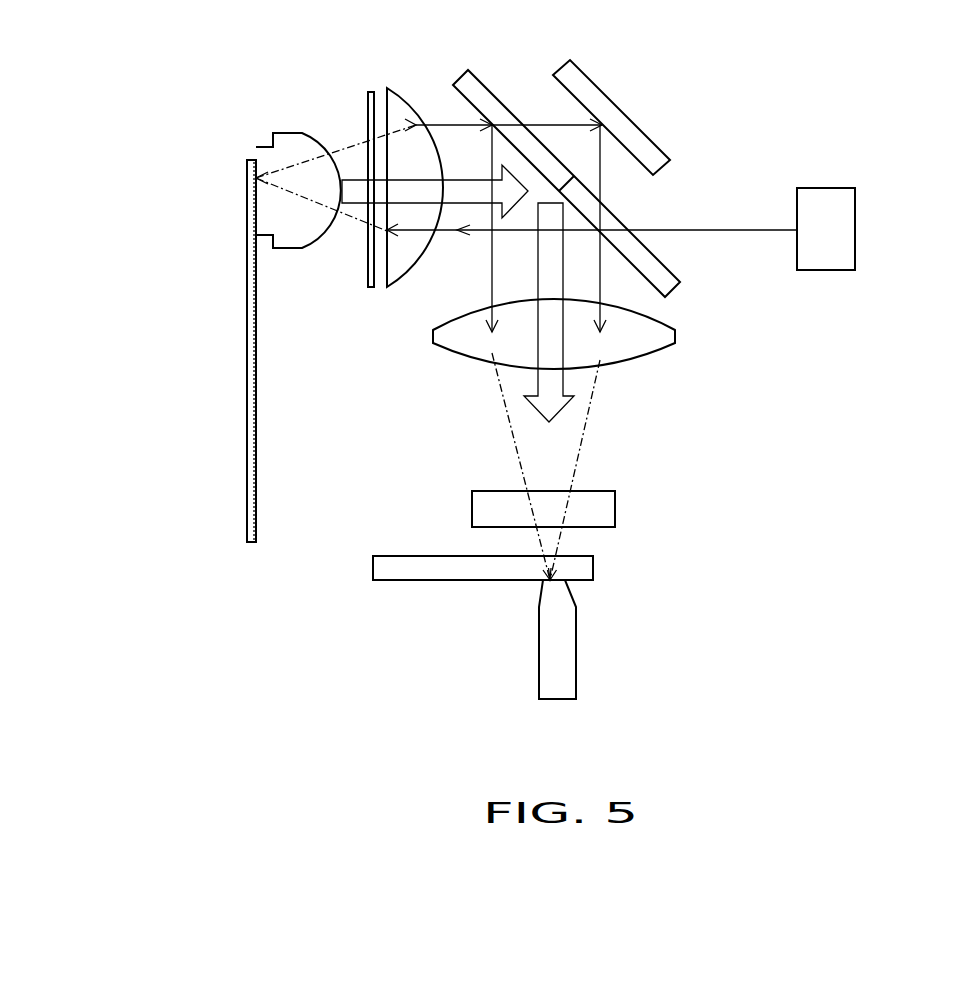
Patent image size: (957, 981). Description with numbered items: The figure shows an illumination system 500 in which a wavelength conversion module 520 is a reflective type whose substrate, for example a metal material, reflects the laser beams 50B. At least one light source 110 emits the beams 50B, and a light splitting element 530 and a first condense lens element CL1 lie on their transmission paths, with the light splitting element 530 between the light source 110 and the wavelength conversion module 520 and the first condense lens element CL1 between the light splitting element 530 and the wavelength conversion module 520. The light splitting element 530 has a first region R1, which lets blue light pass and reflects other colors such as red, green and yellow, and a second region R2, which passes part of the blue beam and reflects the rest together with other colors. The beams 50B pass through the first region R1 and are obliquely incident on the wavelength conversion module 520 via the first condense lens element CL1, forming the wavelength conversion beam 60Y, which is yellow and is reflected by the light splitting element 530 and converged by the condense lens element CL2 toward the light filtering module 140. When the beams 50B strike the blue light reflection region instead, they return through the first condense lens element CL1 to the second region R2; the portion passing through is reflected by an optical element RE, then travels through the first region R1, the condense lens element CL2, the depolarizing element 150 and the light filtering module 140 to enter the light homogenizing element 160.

The illumination system 500 is at (950, 688).
The light source 110 is at (825, 187).
The light filtering module 140 is at (425, 556).
The depolarizing element 150 is at (617, 507).
The light homogenizing element 160 is at (567, 643).
The wavelength conversion module 520 is at (250, 372).
The light splitting element 530 is at (686, 299).
The first region R1 is at (662, 259).
The second region R2 is at (488, 100).
The optical element RE is at (585, 85).
The first condense lens element CL1 is at (407, 110).
The condense lens element CL2 is at (638, 347).
The beams 50B is at (447, 123).
The wavelength conversion beam 60Y is at (463, 180).